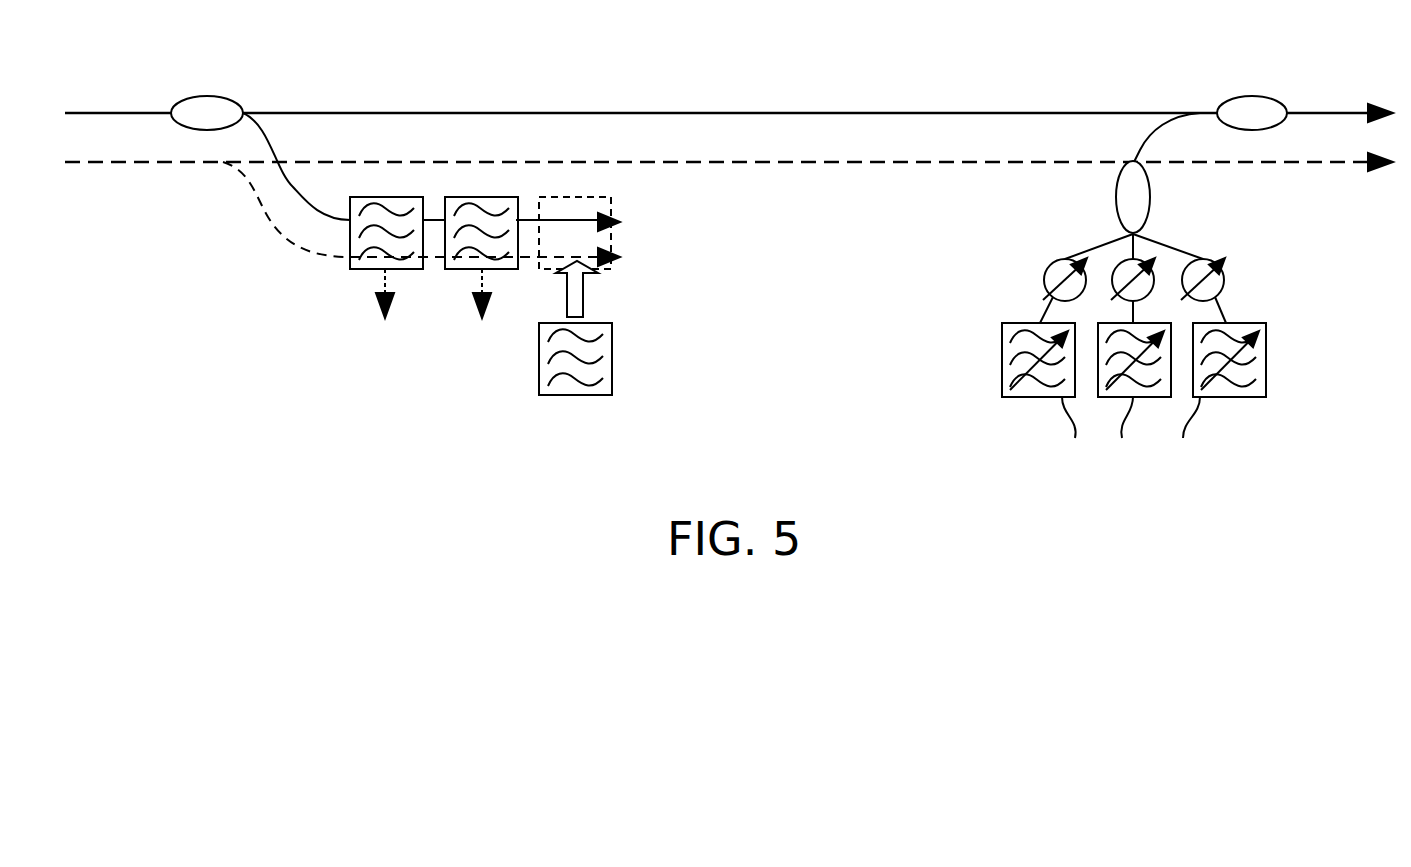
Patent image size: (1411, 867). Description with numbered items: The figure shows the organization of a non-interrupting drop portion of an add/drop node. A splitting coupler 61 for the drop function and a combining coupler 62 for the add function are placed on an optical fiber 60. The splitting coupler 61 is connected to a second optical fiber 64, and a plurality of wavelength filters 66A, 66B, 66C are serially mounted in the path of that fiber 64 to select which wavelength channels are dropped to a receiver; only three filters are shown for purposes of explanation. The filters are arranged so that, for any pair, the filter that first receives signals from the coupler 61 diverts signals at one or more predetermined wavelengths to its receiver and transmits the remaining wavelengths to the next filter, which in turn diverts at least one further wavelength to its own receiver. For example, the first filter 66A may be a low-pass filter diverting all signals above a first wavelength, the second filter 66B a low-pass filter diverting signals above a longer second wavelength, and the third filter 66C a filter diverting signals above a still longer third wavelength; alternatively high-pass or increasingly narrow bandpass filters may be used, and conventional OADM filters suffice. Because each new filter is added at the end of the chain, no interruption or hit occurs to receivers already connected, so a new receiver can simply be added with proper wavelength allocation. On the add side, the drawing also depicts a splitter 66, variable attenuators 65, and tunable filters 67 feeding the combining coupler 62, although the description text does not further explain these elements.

The optical fiber 60 is at (108, 112).
The splitting coupler 61 is at (203, 96).
The combining coupler 62 is at (1250, 96).
The optical fiber 64 is at (300, 197).
The variable optical attenuators 65 is at (1044, 281).
The optical splitter 66 is at (1152, 195).
The first filter 66A is at (350, 269).
The second filter 66B is at (468, 270).
The third filter 66C is at (612, 325).
The tunable filters 67 is at (1134, 396).